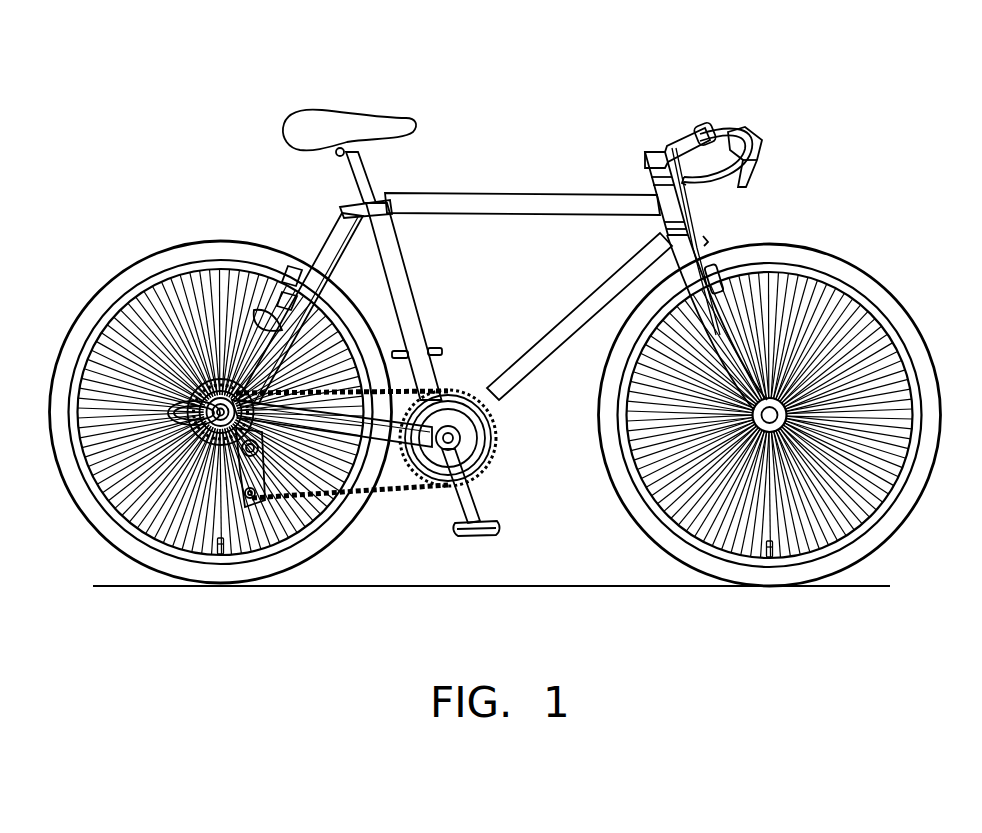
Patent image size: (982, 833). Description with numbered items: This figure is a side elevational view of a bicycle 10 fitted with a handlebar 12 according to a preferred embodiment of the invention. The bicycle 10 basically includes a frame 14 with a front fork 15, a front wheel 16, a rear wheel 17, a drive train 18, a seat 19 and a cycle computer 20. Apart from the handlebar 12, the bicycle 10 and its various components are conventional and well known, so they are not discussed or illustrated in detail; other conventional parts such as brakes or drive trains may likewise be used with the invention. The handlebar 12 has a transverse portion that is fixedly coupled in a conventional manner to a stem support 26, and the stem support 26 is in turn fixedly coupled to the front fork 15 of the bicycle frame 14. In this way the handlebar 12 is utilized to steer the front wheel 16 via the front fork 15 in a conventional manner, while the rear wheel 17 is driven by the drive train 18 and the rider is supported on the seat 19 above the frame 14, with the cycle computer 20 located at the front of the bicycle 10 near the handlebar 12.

The bicycle 10 is at (469, 136).
The handlebar 12 is at (764, 124).
The frame 14 is at (523, 189).
The front fork 15 is at (648, 262).
The front wheel 16 is at (834, 258).
The rear wheel 17 is at (184, 242).
The drive train 18 is at (521, 492).
The seat 19 is at (341, 113).
The cycle computer 20 is at (705, 132).
The stem support 26 is at (651, 148).